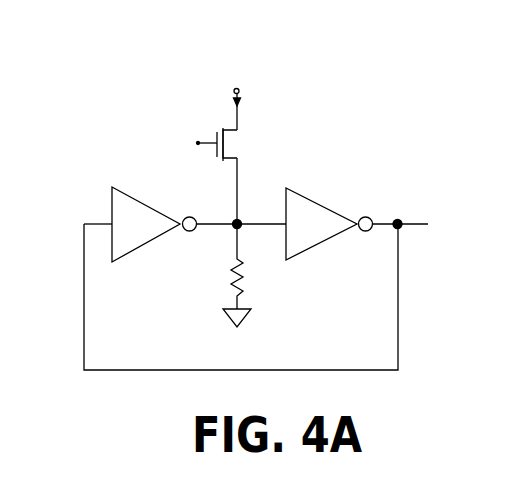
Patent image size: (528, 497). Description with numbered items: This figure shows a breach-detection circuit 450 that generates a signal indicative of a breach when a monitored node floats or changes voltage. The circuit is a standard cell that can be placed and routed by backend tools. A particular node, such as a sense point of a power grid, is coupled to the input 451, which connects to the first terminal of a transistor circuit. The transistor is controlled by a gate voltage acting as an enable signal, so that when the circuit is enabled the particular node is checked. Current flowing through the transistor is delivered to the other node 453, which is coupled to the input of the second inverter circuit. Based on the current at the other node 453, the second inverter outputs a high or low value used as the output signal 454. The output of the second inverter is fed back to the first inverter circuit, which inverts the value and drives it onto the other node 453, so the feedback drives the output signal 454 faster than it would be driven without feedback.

The breach-detection circuit 450 is at (421, 48).
The input 451 is at (240, 86).
The other node 453 is at (239, 218).
The output signal 454 is at (457, 216).